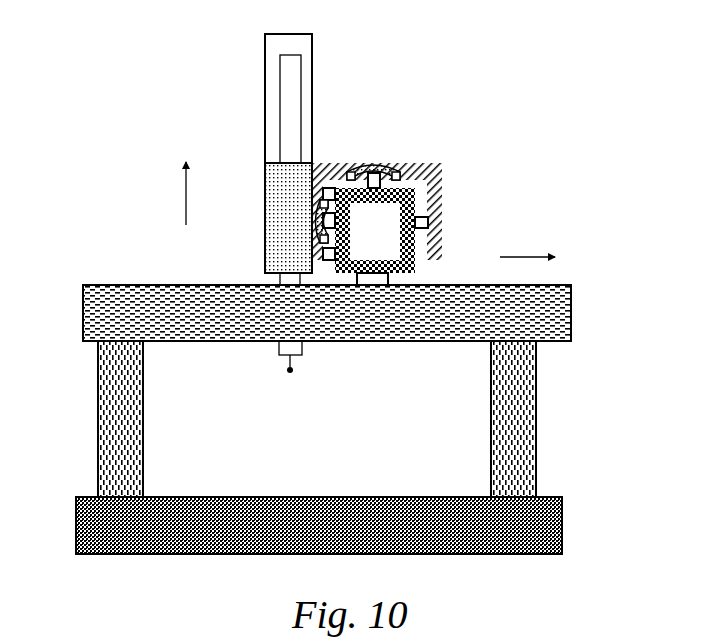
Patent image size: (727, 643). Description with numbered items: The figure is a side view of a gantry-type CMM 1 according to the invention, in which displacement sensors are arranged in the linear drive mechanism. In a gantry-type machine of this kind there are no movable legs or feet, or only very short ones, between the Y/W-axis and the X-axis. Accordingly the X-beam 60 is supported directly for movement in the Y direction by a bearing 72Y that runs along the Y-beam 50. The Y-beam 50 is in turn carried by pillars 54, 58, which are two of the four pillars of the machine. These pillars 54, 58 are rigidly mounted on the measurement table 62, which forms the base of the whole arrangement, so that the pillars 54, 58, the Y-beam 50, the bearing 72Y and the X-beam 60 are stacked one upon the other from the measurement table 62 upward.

The gantry-type CMM 1 is at (482, 33).
The Y-beam 50 is at (550, 332).
The pillar 54 is at (113, 447).
The pillar 58 is at (505, 452).
The X-beam 60 is at (405, 263).
The measurement table 62 is at (492, 547).
The bearing 72Y is at (370, 281).